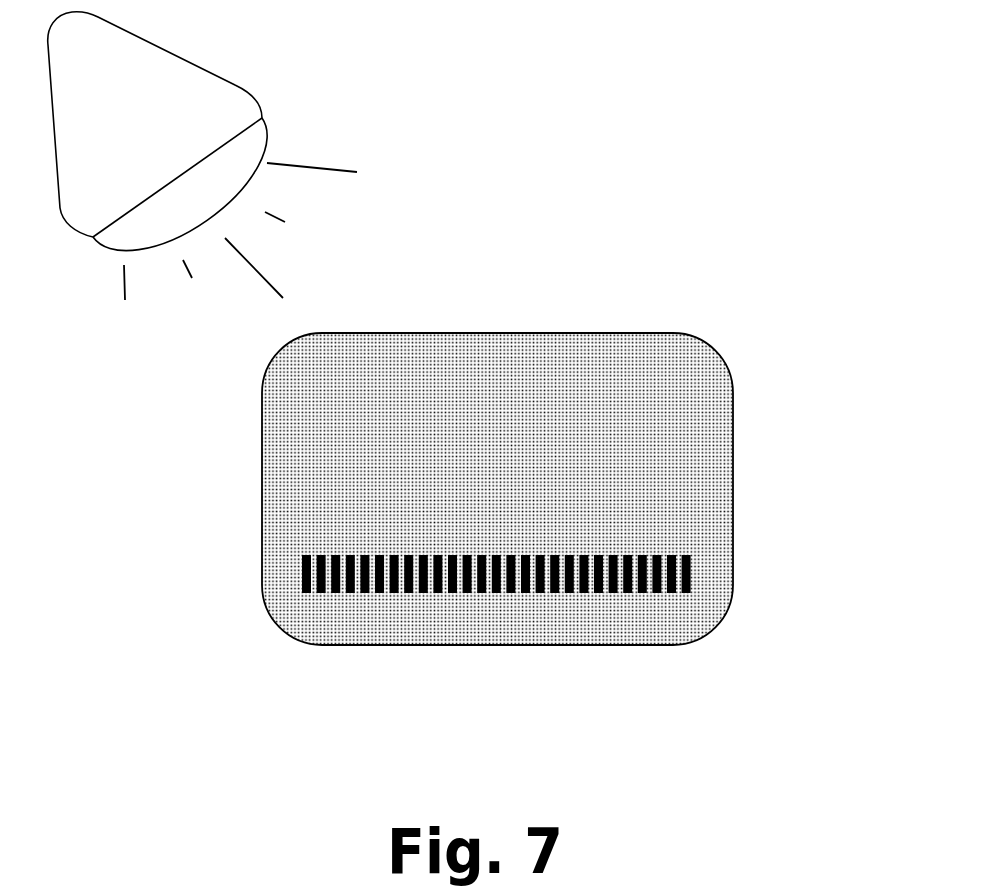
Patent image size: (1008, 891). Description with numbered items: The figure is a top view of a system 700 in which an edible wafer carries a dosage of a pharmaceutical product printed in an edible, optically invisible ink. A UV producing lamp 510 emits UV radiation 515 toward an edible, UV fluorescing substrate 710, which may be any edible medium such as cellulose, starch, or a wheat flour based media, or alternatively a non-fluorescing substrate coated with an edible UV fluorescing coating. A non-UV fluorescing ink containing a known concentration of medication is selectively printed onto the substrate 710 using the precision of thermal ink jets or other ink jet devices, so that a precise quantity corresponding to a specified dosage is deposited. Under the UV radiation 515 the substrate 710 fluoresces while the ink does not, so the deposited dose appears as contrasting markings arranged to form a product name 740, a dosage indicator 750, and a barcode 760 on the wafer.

The UV producing lamp 510 is at (328, 109).
The UV radiation 515 is at (371, 176).
The system 700 is at (712, 284).
The UV fluorescing substrate 710 is at (334, 468).
The product name 740 is at (577, 393).
The dosage indicator 750 is at (595, 478).
The barcode 760 is at (695, 558).